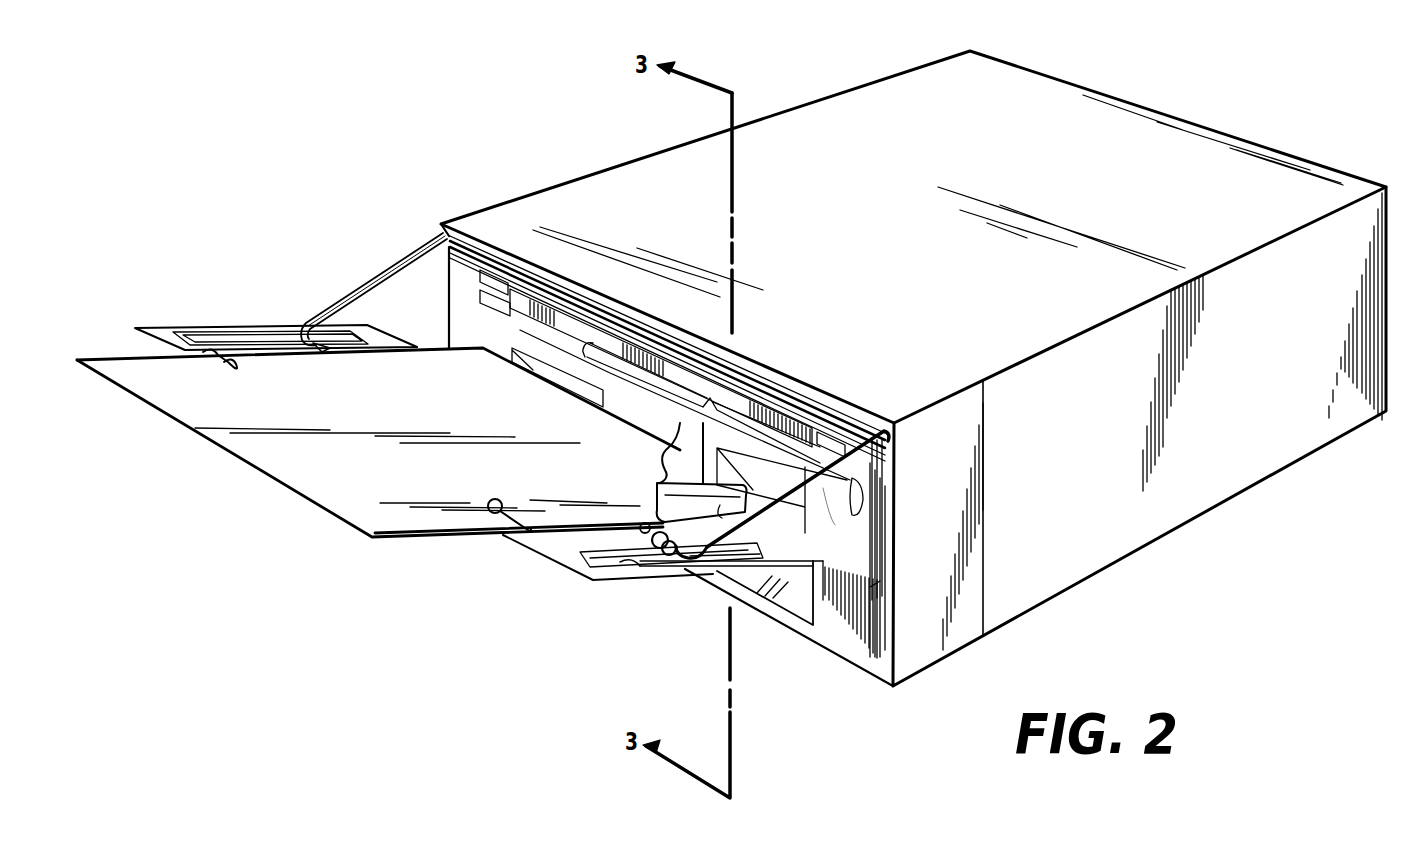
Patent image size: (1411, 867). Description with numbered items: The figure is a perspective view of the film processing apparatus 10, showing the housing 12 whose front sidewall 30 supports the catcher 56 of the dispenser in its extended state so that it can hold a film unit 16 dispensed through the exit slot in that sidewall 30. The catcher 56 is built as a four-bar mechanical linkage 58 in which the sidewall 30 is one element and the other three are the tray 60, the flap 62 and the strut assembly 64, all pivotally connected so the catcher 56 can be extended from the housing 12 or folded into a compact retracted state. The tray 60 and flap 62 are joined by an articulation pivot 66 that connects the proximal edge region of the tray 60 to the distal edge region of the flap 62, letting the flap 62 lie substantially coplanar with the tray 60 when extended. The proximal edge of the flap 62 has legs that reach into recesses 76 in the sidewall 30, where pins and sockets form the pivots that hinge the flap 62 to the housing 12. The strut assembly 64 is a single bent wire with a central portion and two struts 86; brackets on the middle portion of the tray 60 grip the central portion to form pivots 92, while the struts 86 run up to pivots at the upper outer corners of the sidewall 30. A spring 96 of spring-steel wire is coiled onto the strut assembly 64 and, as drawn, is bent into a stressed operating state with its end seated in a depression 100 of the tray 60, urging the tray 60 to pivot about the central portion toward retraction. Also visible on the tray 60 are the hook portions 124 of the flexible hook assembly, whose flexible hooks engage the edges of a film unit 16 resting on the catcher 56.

The film processing apparatus 10 is at (408, 110).
The housing 12 is at (1222, 470).
The film unit 16 is at (385, 540).
The sidewall 30 is at (843, 637).
The catcher 56 is at (240, 322).
The four-bar mechanical linkage 58 is at (372, 264).
The tray 60 is at (612, 587).
The flap 62 is at (697, 450).
The strut assembly 64 is at (822, 487).
The articulation pivot 66 is at (710, 510).
The recesses 76 is at (787, 590).
The struts 86 is at (377, 288).
The pivots 92 is at (315, 350).
The spring 96 is at (716, 563).
The depression 100 is at (620, 562).
The hook portions 124 is at (215, 357).